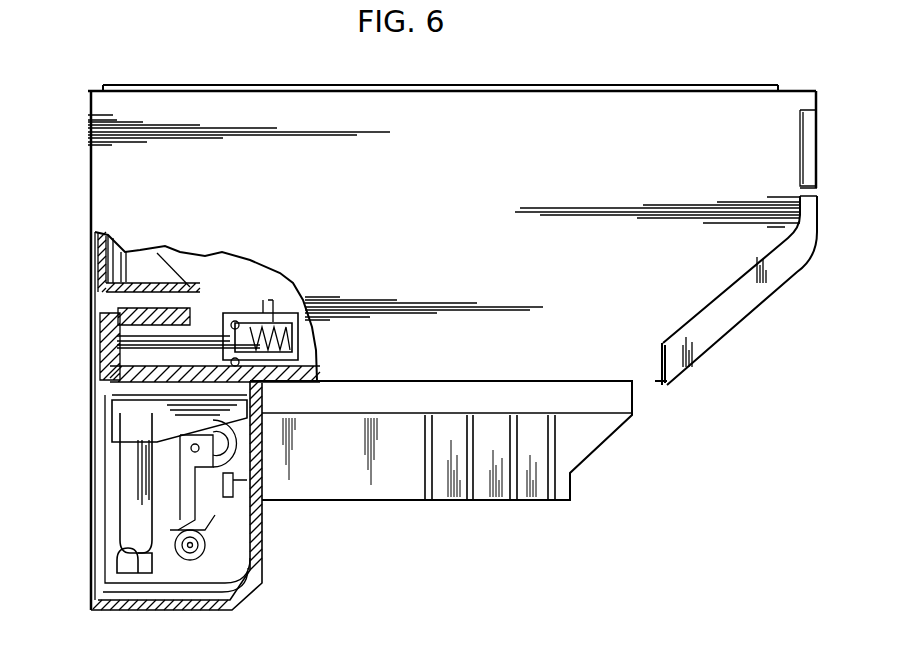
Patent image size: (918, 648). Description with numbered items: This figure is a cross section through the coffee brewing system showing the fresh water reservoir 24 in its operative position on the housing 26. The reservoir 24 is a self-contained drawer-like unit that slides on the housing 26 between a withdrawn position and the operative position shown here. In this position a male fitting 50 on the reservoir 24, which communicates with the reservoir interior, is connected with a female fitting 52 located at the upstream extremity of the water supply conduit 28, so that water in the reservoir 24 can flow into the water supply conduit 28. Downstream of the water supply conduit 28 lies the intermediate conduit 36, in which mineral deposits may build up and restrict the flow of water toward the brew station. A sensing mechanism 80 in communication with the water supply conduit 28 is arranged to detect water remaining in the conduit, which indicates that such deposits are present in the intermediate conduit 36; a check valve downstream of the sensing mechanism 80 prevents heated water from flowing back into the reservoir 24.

The fresh water reservoir 24 is at (720, 318).
The housing 26 is at (629, 365).
The water supply conduit 28 is at (133, 497).
The intermediate conduit 36 is at (120, 555).
The male fitting 50 is at (205, 318).
The female fitting 52 is at (150, 312).
The sensing mechanism 80 is at (133, 438).